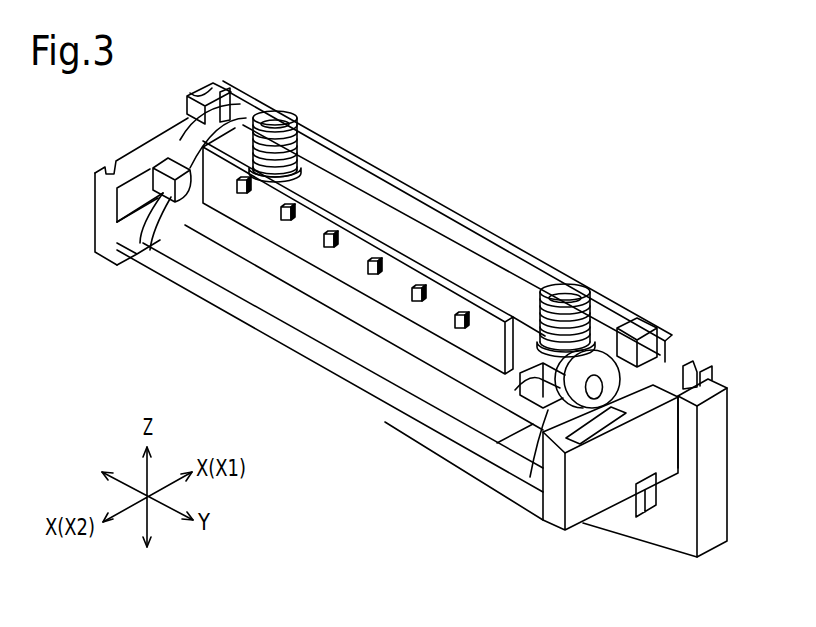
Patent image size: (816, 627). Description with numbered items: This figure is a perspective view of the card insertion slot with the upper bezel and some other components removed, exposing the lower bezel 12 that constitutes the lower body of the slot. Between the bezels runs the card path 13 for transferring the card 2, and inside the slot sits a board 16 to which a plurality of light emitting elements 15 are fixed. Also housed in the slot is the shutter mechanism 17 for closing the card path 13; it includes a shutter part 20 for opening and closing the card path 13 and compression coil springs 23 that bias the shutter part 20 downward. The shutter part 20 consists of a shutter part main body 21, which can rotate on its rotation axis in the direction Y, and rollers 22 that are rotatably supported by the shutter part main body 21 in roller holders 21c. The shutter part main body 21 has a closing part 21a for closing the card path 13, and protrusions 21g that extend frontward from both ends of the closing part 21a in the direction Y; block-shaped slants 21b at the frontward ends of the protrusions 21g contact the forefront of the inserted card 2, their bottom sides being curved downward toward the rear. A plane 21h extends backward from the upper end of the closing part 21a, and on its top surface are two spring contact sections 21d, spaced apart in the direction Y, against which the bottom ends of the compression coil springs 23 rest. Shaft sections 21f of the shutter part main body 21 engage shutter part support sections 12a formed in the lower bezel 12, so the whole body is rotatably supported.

The card 2 is at (193, 143).
The lower bezel 12 is at (731, 485).
The shutter part support sections 12a is at (198, 95).
The card path 13 is at (298, 272).
The light emitting elements 15 is at (242, 195).
The board 16 is at (397, 257).
The shutter mechanism 17 is at (668, 307).
The shutter part 20 is at (437, 221).
The shutter part main body 21 is at (482, 233).
The closing part 21a is at (523, 360).
The slants 21b is at (146, 240).
The roller holders 21c is at (603, 392).
The spring contact sections 21d is at (307, 163).
The shaft sections 21f is at (226, 92).
The protrusions 21g is at (200, 188).
The plane 21h is at (462, 271).
The rollers 22 is at (608, 333).
The compression coil springs 23 is at (283, 112).